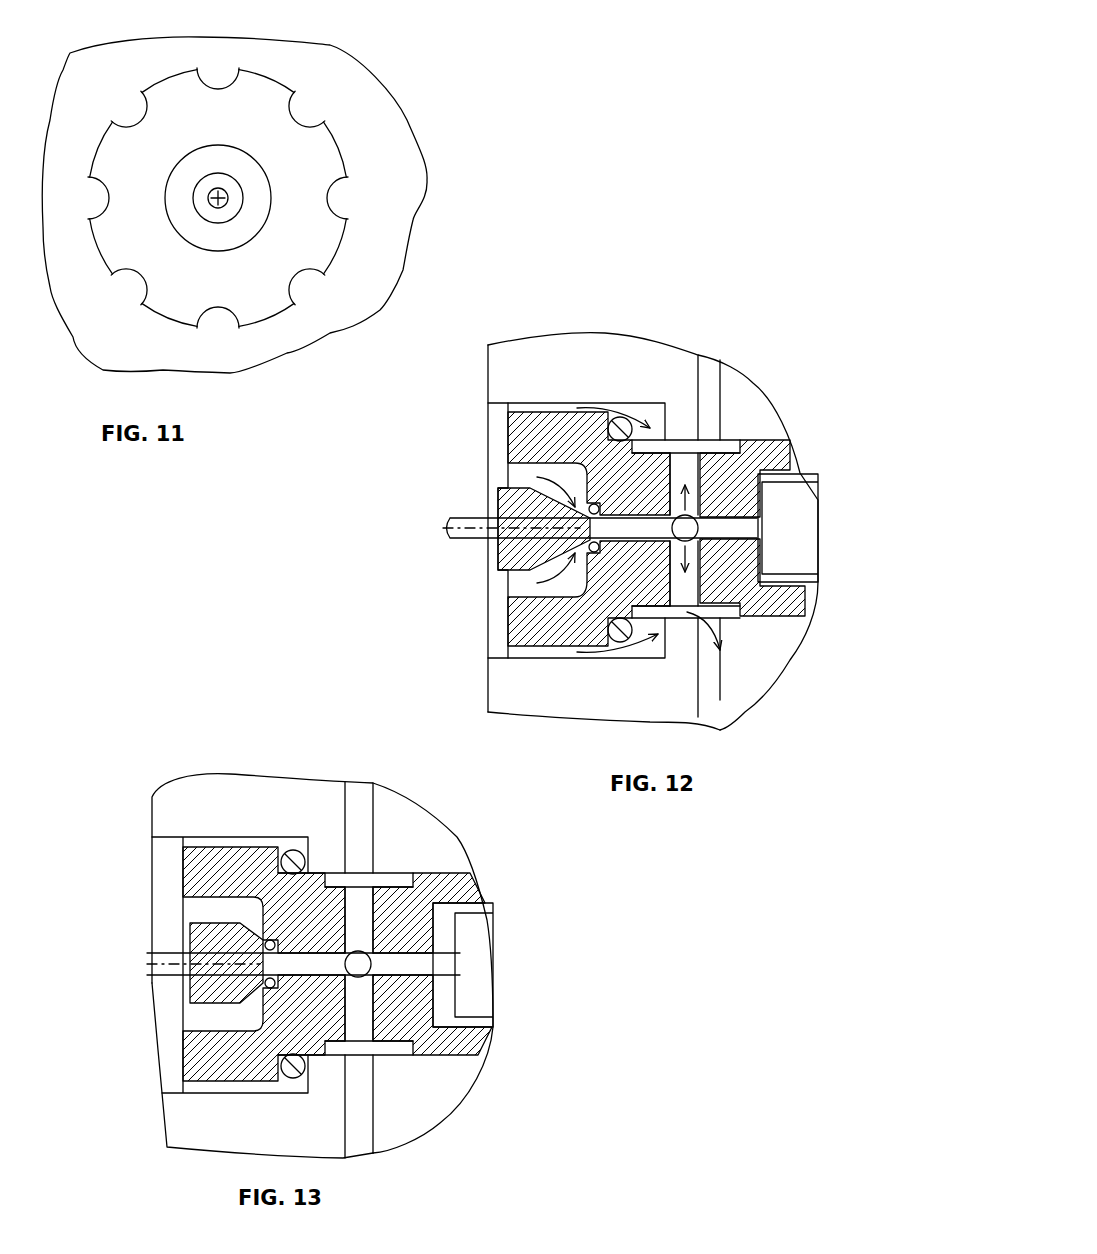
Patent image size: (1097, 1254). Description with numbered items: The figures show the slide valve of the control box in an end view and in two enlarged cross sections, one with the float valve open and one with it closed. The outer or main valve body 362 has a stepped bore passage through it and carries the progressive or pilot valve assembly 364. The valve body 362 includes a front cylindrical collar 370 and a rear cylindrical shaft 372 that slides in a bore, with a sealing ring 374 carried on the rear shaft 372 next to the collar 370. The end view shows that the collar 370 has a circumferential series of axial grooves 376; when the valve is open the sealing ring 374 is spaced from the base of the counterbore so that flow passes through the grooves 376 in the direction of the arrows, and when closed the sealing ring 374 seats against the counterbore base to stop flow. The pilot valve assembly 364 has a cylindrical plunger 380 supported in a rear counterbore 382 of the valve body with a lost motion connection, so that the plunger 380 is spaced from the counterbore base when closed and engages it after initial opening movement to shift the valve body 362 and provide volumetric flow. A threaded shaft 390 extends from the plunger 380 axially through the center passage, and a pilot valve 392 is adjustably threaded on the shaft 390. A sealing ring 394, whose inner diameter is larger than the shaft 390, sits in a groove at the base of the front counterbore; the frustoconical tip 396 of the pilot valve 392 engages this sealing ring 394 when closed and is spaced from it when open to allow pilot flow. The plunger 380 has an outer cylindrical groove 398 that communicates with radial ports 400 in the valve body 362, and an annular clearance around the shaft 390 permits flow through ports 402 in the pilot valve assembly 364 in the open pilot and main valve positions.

In FIG. 12, the main valve body 362 is at (515, 626).
In FIG. 12, the progressive valve assembly 364 is at (824, 512).
In FIG. 13, the progressive valve assembly 364 is at (499, 1004).
In FIG. 11, the front cylindrical collar 370 is at (170, 312).
In FIG. 12, the front cylindrical collar 370 is at (522, 430).
In FIG. 13, the front cylindrical collar 370 is at (264, 964).
In FIG. 12, the rear cylindrical shaft 372 is at (778, 628).
In FIG. 13, the rear cylindrical shaft 372 is at (322, 966).
In FIG. 12, the sealing ring 374 is at (625, 415).
In FIG. 13, the sealing ring 374 is at (300, 857).
In FIG. 11, the axial grooves 376 is at (347, 193).
In FIG. 12, the axial grooves 376 is at (558, 407).
In FIG. 13, the axial grooves 376 is at (238, 842).
In FIG. 12, the cylindrical plunger 380 is at (792, 503).
In FIG. 13, the cylindrical plunger 380 is at (483, 971).
In FIG. 12, the rear counterbore 382 is at (805, 583).
In FIG. 12, the threaded shaft 390 is at (445, 522).
In FIG. 13, the threaded shaft 390 is at (150, 968).
In FIG. 11, the pilot valve 392 is at (205, 188).
In FIG. 12, the pilot valve 392 is at (500, 495).
In FIG. 13, the pilot valve 392 is at (195, 942).
In FIG. 12, the sealing ring 394 is at (594, 528).
In FIG. 13, the sealing ring 394 is at (267, 942).
In FIG. 12, the frustoconical tip 396 is at (510, 585).
In FIG. 13, the outer cylindrical groove 398 is at (388, 878).
In FIG. 12, the radial ports 400 is at (708, 357).
In FIG. 12, the ports 402 is at (690, 455).